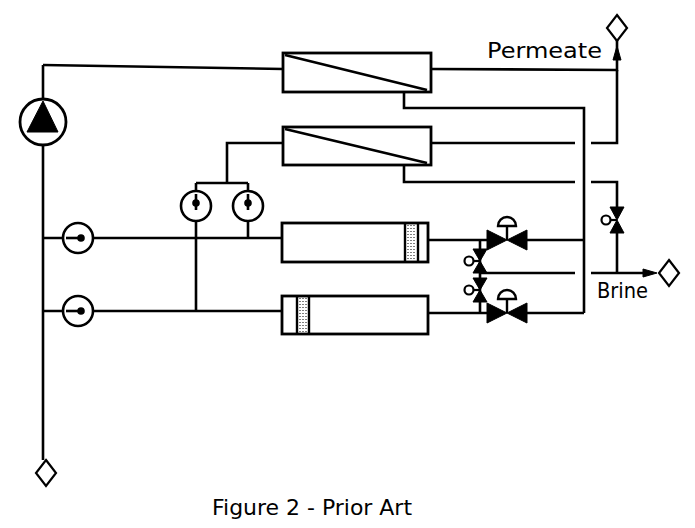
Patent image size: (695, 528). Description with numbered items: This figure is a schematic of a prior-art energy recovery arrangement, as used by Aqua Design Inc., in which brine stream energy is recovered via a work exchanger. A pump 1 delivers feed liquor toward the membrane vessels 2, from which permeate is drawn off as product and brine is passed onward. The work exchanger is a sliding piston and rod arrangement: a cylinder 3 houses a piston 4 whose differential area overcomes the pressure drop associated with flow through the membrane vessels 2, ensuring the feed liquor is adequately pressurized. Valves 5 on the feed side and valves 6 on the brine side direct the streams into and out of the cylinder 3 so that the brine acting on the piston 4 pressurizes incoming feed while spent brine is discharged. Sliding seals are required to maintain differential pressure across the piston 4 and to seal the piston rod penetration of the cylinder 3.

The high pressure pump 1 is at (54, 122).
The reverse osmosis membrane module 2 is at (357, 109).
The work exchanger cylinder 3 is at (355, 264).
The piston 4 is at (357, 264).
The check valve 5 is at (163, 258).
The control valve 6 is at (517, 262).